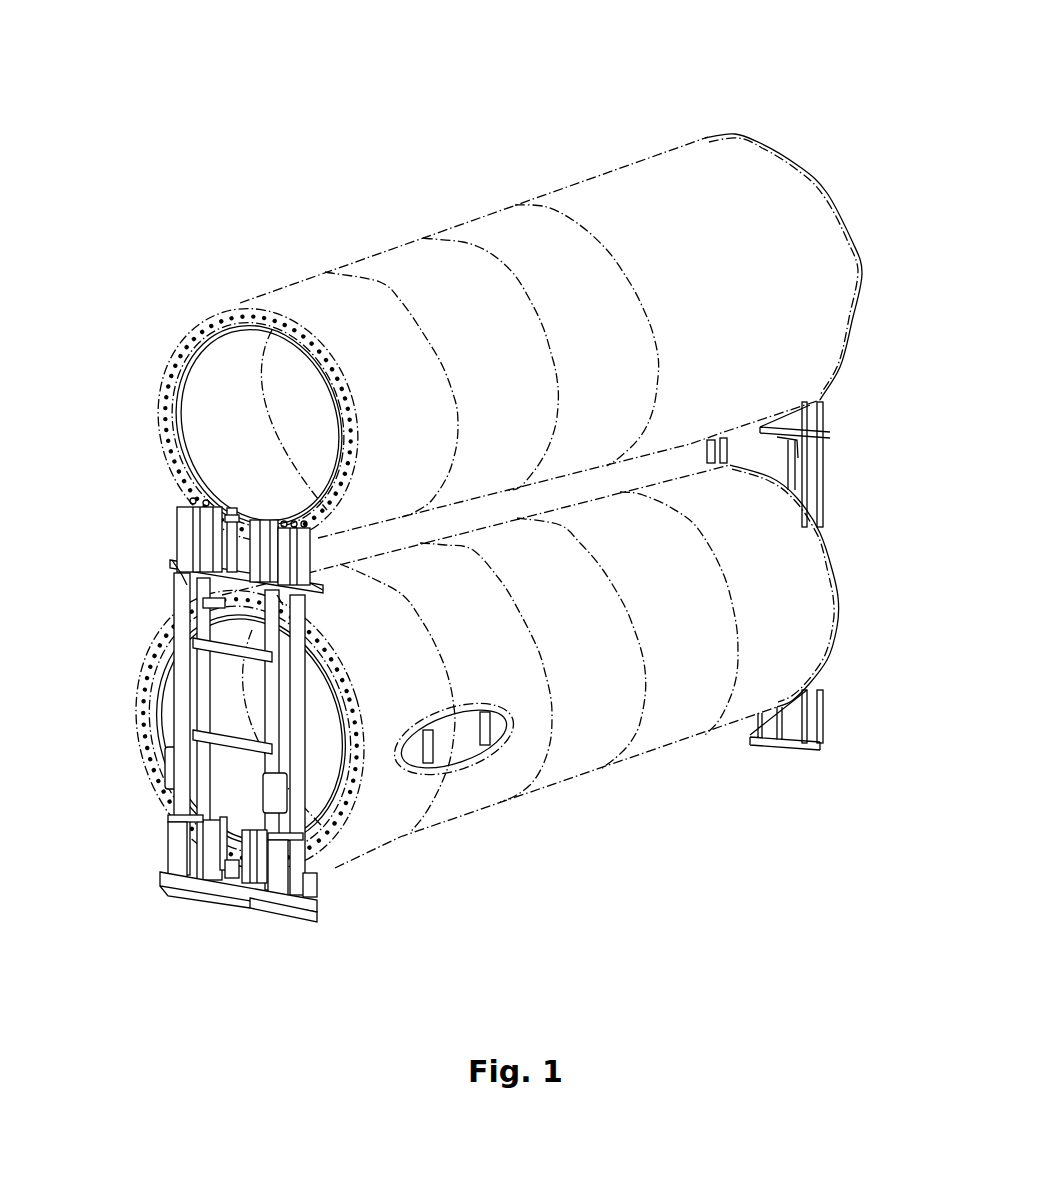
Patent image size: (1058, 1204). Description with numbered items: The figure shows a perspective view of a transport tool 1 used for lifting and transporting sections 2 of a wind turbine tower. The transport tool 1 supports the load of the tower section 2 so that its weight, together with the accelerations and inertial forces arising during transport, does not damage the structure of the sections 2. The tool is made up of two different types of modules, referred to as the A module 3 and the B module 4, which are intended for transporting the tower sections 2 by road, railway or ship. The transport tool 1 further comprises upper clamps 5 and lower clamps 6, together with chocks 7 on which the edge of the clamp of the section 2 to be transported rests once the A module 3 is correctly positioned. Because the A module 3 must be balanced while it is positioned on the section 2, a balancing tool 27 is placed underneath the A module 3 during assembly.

The transport tool 1 is at (160, 905).
The section 2 is at (665, 225).
The A module 3 is at (185, 520).
The B module 4 is at (183, 685).
The upper clamp 5 is at (215, 605).
The lower clamp 6 is at (230, 880).
The chock 7 is at (310, 883).
The balancing tool 27 is at (290, 907).